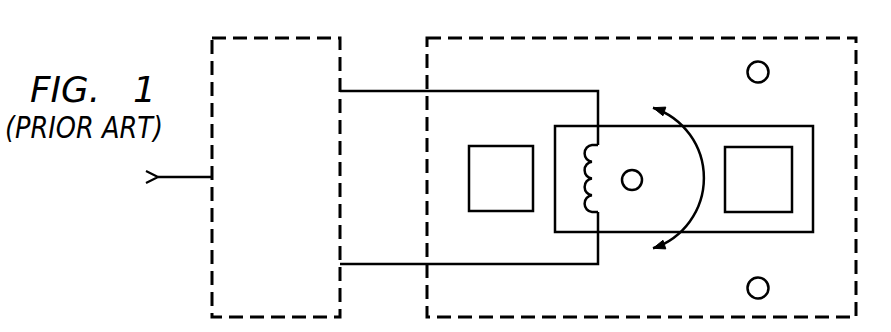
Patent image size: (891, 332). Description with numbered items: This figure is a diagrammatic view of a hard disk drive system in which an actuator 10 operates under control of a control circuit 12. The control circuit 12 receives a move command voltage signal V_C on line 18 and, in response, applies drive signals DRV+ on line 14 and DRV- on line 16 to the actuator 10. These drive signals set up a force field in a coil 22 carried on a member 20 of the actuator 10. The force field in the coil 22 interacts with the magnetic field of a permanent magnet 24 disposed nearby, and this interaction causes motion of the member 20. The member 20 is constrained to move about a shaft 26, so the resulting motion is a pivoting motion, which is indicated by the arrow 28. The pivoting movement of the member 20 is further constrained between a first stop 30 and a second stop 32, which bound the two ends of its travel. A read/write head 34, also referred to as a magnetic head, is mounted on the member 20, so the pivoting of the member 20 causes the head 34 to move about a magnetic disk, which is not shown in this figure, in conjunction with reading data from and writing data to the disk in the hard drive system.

The actuator 10 is at (655, 297).
The control circuit 12 is at (289, 221).
The line 14 is at (392, 93).
The line 16 is at (392, 266).
The line 18 is at (180, 178).
The member 20 is at (705, 126).
The coil 22 is at (590, 170).
The permanent magnet 24 is at (515, 190).
The shaft 26 is at (642, 180).
The arrow 28 is at (670, 241).
The first stop 30 is at (769, 68).
The second stop 32 is at (769, 292).
The read/write head 34 is at (773, 192).